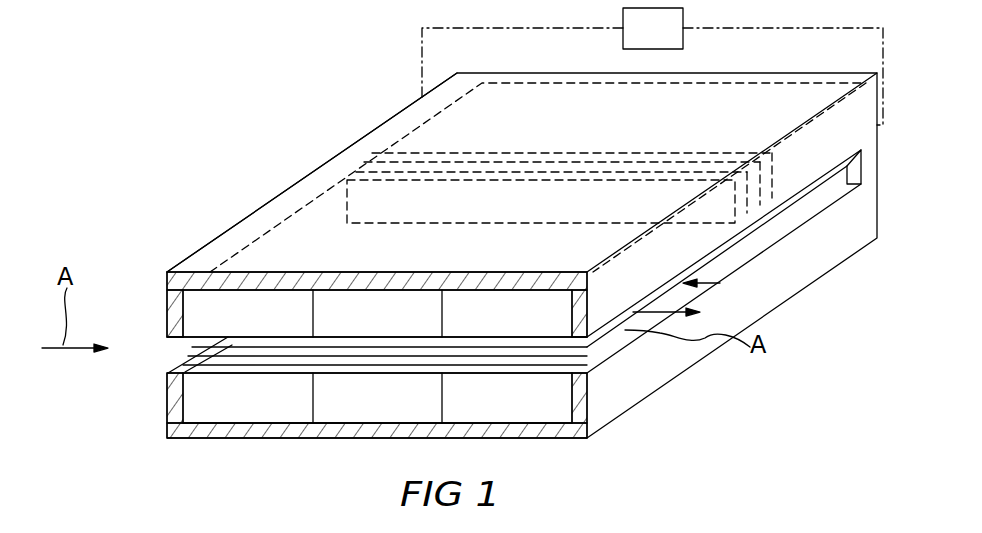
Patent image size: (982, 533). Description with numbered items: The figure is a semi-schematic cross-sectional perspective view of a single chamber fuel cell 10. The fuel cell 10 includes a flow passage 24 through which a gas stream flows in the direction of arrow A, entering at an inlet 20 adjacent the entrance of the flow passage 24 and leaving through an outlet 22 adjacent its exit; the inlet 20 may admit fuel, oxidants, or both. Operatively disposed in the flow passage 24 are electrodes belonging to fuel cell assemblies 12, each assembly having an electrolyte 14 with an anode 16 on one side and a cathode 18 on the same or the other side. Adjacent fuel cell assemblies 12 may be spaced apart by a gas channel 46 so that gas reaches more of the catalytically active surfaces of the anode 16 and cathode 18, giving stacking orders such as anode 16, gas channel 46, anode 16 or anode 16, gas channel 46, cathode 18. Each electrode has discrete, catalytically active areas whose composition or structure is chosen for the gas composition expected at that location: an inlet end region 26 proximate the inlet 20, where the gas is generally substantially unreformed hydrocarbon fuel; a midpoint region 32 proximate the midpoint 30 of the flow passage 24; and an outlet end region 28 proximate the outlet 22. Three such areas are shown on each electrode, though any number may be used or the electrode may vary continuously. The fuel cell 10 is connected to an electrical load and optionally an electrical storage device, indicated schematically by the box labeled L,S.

The fuel cell 10 is at (232, 185).
The fuel cell assembly 12 is at (178, 356).
The electrolyte 14 is at (363, 165).
The anode 16 is at (358, 173).
The cathode 18 is at (380, 153).
The inlet 20 is at (167, 340).
The outlet 22 is at (583, 339).
The flow passage 24 is at (700, 283).
The inlet end region 26 is at (427, 140).
The outlet end region 28 is at (752, 140).
The midpoint 30 is at (380, 240).
The midpoint region 32 is at (587, 140).
The gas channel 46 is at (625, 328).